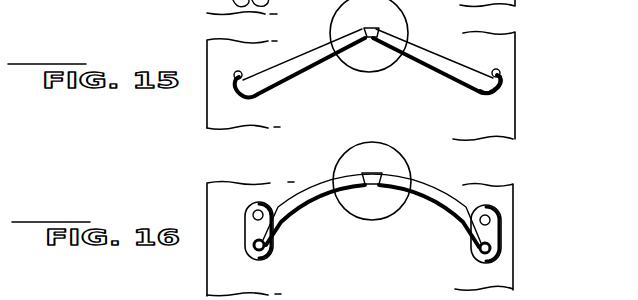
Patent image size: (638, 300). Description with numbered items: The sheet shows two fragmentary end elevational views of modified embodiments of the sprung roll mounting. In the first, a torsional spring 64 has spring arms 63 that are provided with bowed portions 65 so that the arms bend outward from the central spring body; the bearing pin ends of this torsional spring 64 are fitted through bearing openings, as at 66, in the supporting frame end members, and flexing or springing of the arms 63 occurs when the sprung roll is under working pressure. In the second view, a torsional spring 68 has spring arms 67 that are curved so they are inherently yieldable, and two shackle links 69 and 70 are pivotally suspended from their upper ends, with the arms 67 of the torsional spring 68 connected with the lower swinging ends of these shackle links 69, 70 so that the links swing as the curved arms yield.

In FIG. 15, the spring arms 63 is at (428, 70).
In FIG. 15, the torsional spring 64 is at (373, 27).
In FIG. 15, the bowed portions 65 is at (490, 93).
In FIG. 15, the bearing openings 66 is at (503, 72).
In FIG. 16, the spring arms 67 is at (455, 225).
In FIG. 16, the torsional spring 68 is at (380, 173).
In FIG. 16, the shackle link 69 is at (250, 228).
In FIG. 16, the shackle link 70 is at (493, 232).